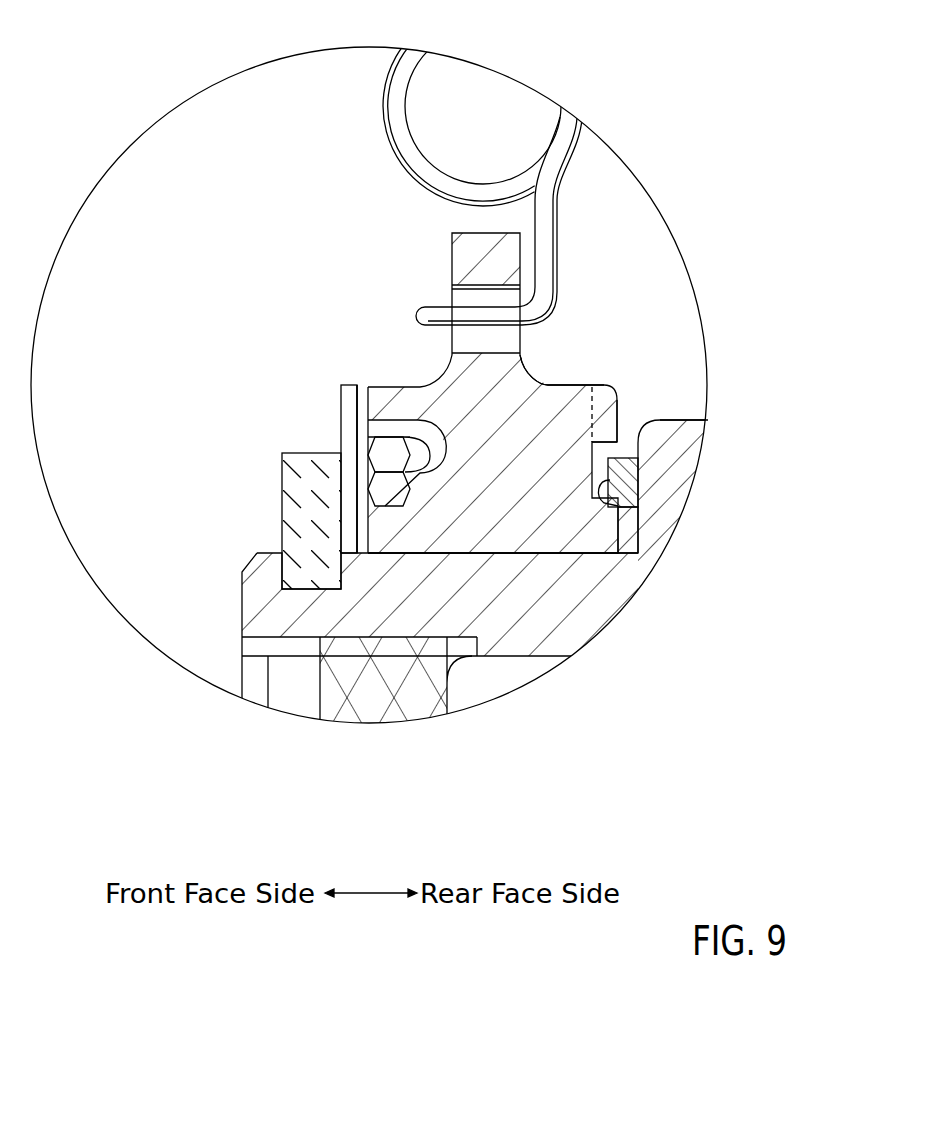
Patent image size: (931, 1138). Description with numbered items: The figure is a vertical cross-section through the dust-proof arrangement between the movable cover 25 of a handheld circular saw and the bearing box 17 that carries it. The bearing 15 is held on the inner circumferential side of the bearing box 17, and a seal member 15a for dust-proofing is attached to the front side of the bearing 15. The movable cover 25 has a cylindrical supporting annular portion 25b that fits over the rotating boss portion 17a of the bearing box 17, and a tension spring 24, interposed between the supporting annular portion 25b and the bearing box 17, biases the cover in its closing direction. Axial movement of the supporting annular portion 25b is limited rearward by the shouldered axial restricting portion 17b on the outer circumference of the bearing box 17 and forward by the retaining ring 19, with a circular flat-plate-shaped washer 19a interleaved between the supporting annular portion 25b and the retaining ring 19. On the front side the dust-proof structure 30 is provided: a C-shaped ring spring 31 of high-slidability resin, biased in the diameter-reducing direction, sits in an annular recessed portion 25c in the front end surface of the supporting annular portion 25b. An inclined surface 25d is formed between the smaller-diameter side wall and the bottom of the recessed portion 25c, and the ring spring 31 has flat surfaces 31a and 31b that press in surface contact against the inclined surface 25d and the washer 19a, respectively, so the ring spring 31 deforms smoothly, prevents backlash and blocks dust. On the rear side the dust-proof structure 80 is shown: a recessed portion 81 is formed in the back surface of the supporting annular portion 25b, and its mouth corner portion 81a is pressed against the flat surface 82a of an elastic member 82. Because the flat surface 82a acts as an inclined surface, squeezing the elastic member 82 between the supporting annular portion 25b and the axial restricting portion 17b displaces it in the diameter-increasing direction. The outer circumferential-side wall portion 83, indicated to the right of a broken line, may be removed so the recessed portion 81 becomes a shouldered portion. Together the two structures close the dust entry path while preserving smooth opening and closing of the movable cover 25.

The bearing 15 is at (480, 682).
The seal member 15a is at (350, 706).
The bearing box 17 is at (270, 605).
The rotating boss portion 17a is at (543, 552).
The axial restricting portion 17b is at (690, 436).
The retaining ring 19 is at (298, 470).
The washer 19a is at (346, 404).
The tension spring 24 is at (392, 97).
The movable cover 25 is at (506, 393).
The supporting annular portion 25b is at (543, 403).
The recessed portion 25c is at (395, 405).
The inclined surface 25d is at (400, 478).
The dust-proof structure 30 is at (308, 376).
The ring spring 31 is at (368, 413).
The flat surface 31a is at (458, 432).
The flat surface 31b is at (385, 452).
The dust-proof structure 80 is at (653, 303).
The recessed portion 81 is at (621, 457).
The mouth corner portion 81a is at (603, 480).
The elastic member 82 is at (643, 445).
The flat surface 82a is at (620, 506).
The outer circumferential-side wall portion 83 is at (603, 405).